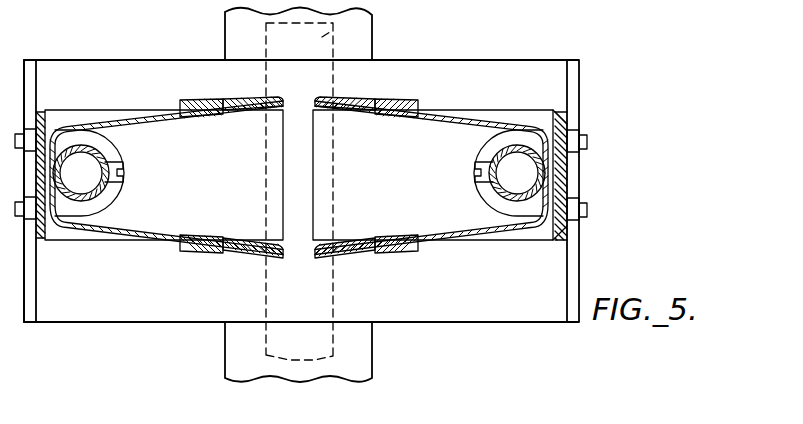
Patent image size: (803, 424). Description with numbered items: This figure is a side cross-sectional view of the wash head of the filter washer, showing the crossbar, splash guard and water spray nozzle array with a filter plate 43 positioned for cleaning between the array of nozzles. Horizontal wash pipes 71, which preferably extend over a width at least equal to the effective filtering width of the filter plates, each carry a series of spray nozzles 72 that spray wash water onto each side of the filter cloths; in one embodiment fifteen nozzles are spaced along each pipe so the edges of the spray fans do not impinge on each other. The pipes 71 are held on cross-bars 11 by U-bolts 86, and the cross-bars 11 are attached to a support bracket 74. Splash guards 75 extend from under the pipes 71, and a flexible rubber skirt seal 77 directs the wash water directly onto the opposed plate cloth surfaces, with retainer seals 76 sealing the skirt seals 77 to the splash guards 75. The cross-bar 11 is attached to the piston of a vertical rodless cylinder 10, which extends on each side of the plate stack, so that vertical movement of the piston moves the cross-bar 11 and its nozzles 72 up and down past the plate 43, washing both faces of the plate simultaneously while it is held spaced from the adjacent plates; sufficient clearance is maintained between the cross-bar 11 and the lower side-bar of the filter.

The vertical rodless cylinder 10 is at (372, 55).
The cross-bar 11 is at (40, 236).
The filter plate 43 is at (372, 23).
The wash pipe 71 is at (516, 207).
The spray nozzle 72 is at (124, 182).
The support bracket 74 is at (28, 60).
The splash guard 75 is at (133, 118).
The retainer seal 76 is at (182, 100).
The flexible rubber skirt seal 77 is at (228, 100).
The U-bolt 86 is at (488, 182).